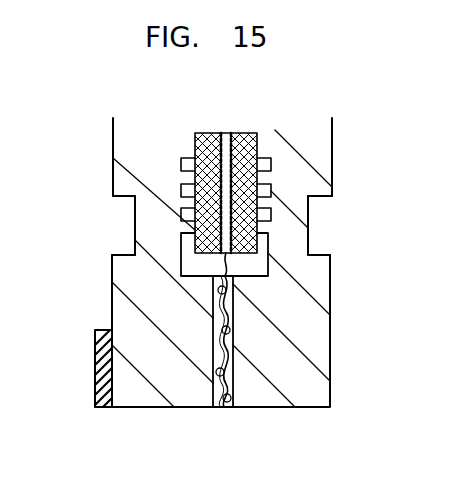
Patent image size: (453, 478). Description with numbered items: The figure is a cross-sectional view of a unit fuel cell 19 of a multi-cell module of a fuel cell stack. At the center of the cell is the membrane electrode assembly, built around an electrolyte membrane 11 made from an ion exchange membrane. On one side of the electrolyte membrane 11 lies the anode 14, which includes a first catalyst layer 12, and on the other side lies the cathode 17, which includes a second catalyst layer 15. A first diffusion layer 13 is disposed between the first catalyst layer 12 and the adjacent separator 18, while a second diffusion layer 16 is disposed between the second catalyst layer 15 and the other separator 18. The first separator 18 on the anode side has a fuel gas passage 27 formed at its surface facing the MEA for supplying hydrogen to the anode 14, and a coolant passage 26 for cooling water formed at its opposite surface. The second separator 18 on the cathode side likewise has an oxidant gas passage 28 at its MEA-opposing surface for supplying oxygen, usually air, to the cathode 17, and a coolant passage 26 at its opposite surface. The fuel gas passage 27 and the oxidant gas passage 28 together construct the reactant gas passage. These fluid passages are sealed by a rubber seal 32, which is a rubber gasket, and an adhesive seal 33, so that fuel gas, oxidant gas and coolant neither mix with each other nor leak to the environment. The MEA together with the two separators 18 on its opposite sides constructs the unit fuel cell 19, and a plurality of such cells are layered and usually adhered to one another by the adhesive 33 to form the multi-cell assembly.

The electrolyte membrane 11 is at (226, 200).
The first catalyst layer 12 is at (183, 170).
The first diffusion layer 13 is at (183, 195).
The anode 14 is at (70, 117).
The second catalyst layer 15 is at (271, 167).
The second diffusion layer 16 is at (271, 195).
The cathode 17 is at (376, 117).
The separator 18 is at (172, 297).
The unit fuel cell 19 is at (330, 412).
The coolant passage 26 is at (135, 226).
The fuel gas passage 27 is at (182, 163).
The oxidant gas passage 28 is at (272, 163).
The rubber seal 32 is at (98, 364).
The adhesive seal 33 is at (237, 328).